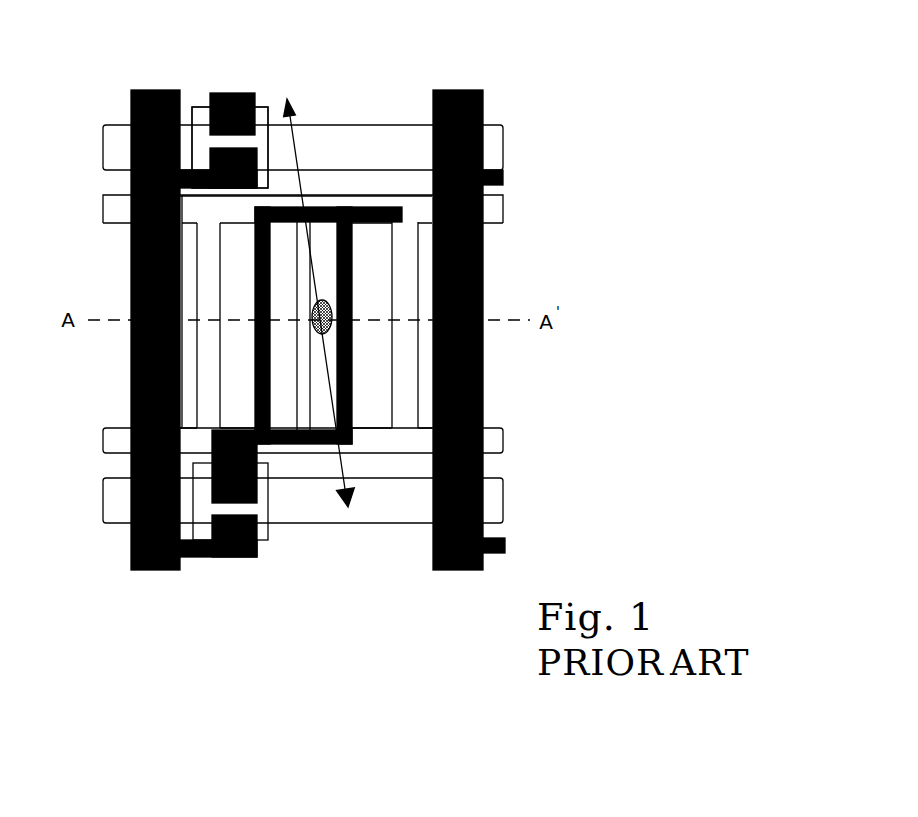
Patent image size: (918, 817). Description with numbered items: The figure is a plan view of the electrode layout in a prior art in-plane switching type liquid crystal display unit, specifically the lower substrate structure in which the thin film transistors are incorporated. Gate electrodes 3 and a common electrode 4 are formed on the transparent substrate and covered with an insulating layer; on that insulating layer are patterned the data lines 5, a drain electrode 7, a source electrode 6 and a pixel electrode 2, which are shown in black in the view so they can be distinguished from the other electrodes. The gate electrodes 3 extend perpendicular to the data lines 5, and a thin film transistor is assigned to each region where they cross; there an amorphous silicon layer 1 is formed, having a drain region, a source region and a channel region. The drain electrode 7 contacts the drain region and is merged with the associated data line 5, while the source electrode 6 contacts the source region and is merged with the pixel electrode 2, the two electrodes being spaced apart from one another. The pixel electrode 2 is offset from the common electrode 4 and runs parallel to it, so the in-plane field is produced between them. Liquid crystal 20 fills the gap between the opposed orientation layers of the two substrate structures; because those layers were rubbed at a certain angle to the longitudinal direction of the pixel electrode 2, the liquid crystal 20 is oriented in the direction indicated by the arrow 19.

The amorphous silicon layer 1 is at (265, 110).
The pixel electrode 2 is at (352, 354).
The gate electrode 3 is at (503, 478).
The common electrode 4 is at (103, 438).
The data line 5 is at (132, 553).
The source electrode 6 is at (257, 458).
The drain electrode 7 is at (257, 545).
The arrow 19 is at (293, 145).
The liquid crystal 20 is at (332, 316).